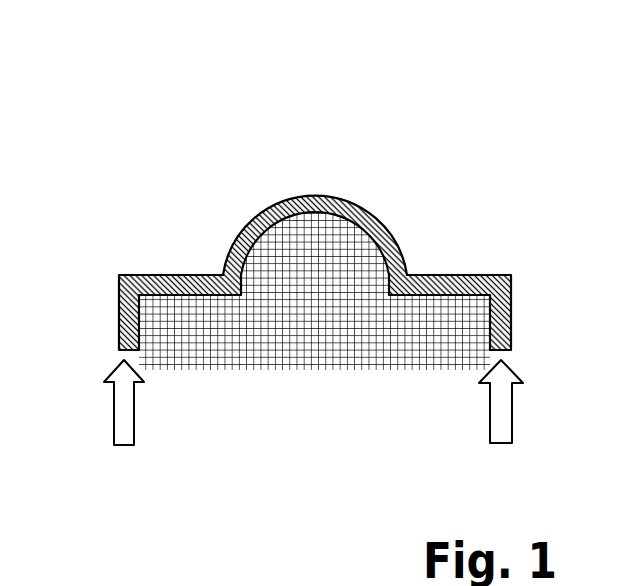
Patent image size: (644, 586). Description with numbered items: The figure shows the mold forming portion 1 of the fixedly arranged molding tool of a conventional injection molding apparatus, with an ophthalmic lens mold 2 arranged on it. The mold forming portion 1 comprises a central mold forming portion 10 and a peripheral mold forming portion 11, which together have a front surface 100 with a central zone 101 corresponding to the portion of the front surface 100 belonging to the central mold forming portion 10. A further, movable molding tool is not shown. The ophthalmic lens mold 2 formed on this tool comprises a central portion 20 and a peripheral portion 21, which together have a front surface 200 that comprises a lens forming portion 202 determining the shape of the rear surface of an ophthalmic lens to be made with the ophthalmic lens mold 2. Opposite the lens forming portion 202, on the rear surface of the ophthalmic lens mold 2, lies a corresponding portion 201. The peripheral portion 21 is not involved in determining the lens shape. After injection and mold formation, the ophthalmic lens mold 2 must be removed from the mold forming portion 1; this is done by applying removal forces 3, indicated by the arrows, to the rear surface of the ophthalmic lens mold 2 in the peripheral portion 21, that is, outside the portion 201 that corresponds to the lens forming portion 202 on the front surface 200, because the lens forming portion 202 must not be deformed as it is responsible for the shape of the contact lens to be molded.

The mold forming portion 1 is at (312, 392).
The central mold forming portion 10 is at (302, 225).
The front surface 100 is at (155, 293).
The central zone 101 is at (330, 218).
The peripheral mold forming portion 11 is at (182, 317).
The ophthalmic lens mold 2 is at (438, 221).
The central portion 20 is at (312, 194).
The front surface 200 is at (198, 275).
The portion of the rear surface 201 is at (353, 217).
The lens forming portion 202 is at (263, 207).
The peripheral portion 21 is at (162, 275).
The removal forces 3 is at (123, 423).